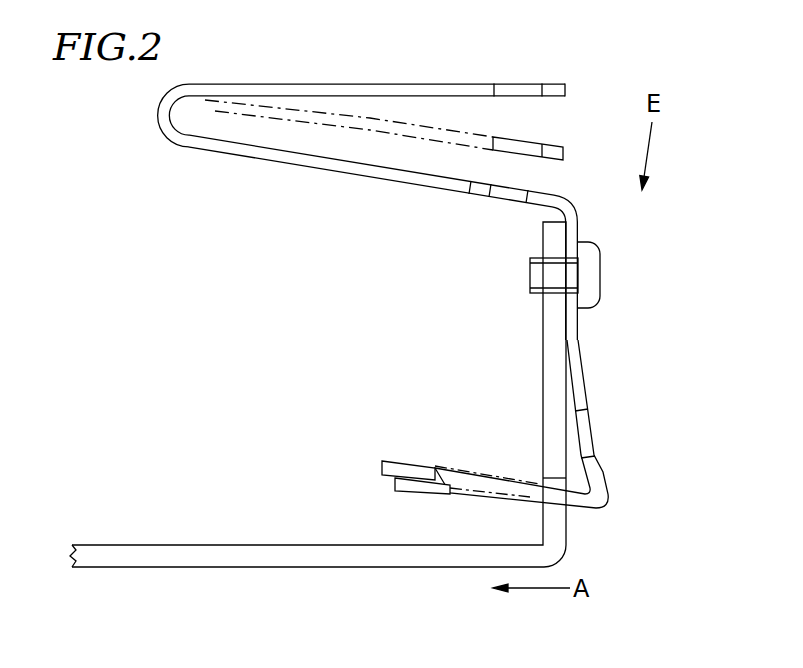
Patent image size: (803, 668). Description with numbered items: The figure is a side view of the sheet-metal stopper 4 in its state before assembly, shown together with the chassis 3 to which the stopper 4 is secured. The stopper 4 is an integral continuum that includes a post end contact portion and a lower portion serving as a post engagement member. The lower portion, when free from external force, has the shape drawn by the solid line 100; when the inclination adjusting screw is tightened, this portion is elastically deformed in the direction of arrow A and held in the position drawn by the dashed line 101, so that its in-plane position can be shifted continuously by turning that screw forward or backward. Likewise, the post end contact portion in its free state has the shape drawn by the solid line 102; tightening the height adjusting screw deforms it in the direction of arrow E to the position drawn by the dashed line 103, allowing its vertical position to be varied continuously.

The chassis 3 is at (203, 560).
The stopper 4 is at (580, 325).
The solid line 100 is at (607, 469).
The dashed line 101 is at (573, 448).
The solid line 102 is at (392, 83).
The dashed line 103 is at (533, 142).